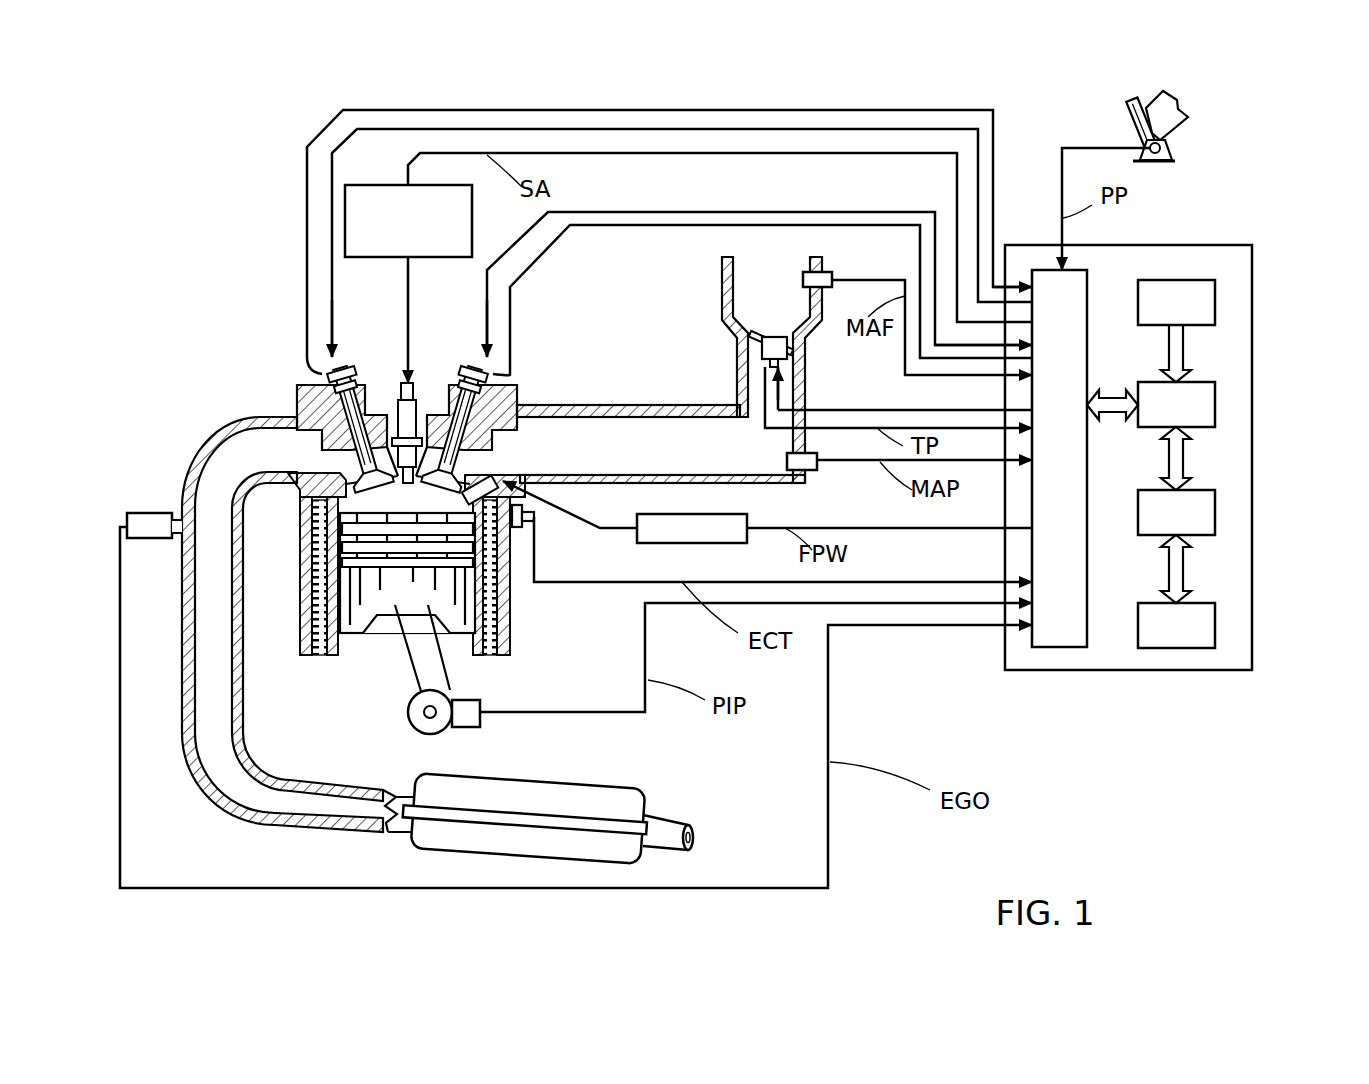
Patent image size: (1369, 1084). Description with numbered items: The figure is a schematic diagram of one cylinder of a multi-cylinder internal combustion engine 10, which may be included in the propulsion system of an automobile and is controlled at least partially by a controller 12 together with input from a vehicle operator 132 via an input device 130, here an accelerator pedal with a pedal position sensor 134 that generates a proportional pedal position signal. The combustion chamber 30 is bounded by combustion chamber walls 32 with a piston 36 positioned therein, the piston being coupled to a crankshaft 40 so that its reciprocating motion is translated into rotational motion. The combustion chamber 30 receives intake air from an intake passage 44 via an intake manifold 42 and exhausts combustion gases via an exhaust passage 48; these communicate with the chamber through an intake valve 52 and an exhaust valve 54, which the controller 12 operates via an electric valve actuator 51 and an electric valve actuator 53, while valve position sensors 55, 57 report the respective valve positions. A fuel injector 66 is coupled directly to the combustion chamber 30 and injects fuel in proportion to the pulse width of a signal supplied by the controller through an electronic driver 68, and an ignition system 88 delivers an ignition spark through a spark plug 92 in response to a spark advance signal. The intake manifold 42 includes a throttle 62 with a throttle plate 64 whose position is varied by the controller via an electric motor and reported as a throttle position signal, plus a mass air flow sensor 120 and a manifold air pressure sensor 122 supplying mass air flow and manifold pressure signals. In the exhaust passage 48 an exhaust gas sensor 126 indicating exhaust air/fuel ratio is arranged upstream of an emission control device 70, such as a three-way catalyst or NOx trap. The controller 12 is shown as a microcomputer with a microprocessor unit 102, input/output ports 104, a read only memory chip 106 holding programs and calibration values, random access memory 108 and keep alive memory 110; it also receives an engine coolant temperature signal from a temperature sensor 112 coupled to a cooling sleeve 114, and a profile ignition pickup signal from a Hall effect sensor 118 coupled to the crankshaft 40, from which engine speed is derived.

The engine 10 is at (228, 337).
The controller 12 is at (1243, 245).
The combustion chamber 30 is at (403, 490).
The combustion chamber walls 32 is at (337, 640).
The piston 36 is at (390, 602).
The crankshaft 40 is at (420, 733).
The intake manifold 42 is at (759, 309).
The intake passage 44 is at (689, 459).
The exhaust passage 48 is at (251, 464).
The electric valve actuator 51 is at (478, 368).
The intake valve 52 is at (455, 462).
The electric valve actuator 53 is at (345, 368).
The exhaust valve 54 is at (300, 422).
The valve position sensor 55 is at (493, 373).
The valve position sensor 57 is at (307, 372).
The throttle 62 is at (790, 345).
The throttle plate 64 is at (752, 340).
The fuel injector 66 is at (522, 512).
The electronic driver 68 is at (658, 543).
The emission control device 70 is at (600, 781).
The ignition system 88 is at (360, 185).
The spark plug 92 is at (416, 400).
The microprocessor unit 102 is at (1216, 400).
The input/output ports 104 is at (1088, 278).
The read only memory chip 106 is at (1216, 300).
The random access memory 108 is at (1216, 512).
The keep alive memory 110 is at (1216, 624).
The temperature sensor 112 is at (534, 522).
The cooling sleeve 114 is at (513, 607).
The Hall effect sensor 118 is at (468, 727).
The mass air flow sensor 120 is at (825, 272).
The manifold air pressure sensor 122 is at (815, 470).
The exhaust gas sensor 126 is at (127, 520).
The input device 130 is at (1140, 118).
The vehicle operator 132 is at (1195, 110).
The pedal position sensor 134 is at (1170, 148).